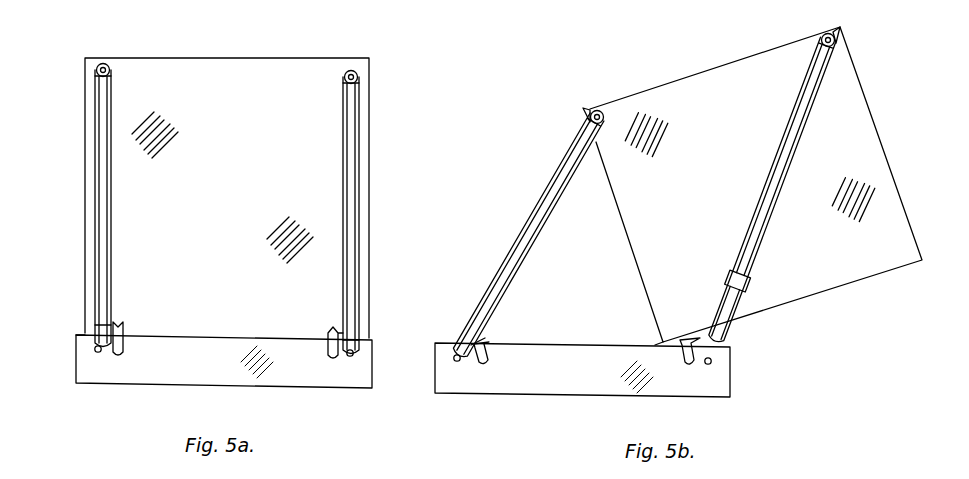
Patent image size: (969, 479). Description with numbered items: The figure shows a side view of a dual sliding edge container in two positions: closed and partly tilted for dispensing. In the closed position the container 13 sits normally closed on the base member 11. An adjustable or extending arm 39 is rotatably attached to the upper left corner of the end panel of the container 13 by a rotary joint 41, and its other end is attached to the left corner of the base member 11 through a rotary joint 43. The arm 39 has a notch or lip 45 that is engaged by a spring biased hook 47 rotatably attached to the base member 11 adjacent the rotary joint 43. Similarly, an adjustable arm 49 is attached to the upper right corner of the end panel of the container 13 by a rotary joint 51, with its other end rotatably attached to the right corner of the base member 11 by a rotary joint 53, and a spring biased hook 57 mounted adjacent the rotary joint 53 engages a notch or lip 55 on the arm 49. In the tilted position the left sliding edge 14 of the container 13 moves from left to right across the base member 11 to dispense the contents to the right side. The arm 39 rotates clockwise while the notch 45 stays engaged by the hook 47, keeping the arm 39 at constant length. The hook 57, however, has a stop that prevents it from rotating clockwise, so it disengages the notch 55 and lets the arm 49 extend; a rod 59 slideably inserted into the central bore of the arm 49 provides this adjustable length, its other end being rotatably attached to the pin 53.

In FIG. 5A, the base member 11 is at (198, 376).
In FIG. 5B, the base member 11 is at (606, 380).
In FIG. 5A, the container 13 is at (263, 62).
In FIG. 5B, the container 13 is at (700, 70).
In FIG. 5A, the left sliding edge 14 is at (85, 333).
In FIG. 5B, the left sliding edge 14 is at (660, 346).
In FIG. 5A, the adjustable arm 39 is at (103, 122).
In FIG. 5B, the adjustable arm 39 is at (548, 197).
In FIG. 5A, the rotary joint 41 is at (103, 63).
In FIG. 5B, the rotary joint 41 is at (597, 110).
In FIG. 5A, the rotary joint 43 is at (95, 351).
In FIG. 5B, the rotary joint 43 is at (455, 360).
In FIG. 5A, the notch 45 is at (104, 330).
In FIG. 5B, the notch 45 is at (480, 344).
In FIG. 5A, the spring biased hook 47 is at (120, 330).
In FIG. 5B, the spring biased hook 47 is at (490, 356).
In FIG. 5A, the adjustable arm 49 is at (355, 155).
In FIG. 5B, the adjustable arm 49 is at (795, 132).
In FIG. 5A, the rotary joint 51 is at (358, 77).
In FIG. 5B, the rotary joint 51 is at (834, 40).
In FIG. 5A, the rotary joint 53 is at (350, 357).
In FIG. 5B, the rotary joint 53 is at (712, 362).
In FIG. 5A, the notch 55 is at (347, 336).
In FIG. 5B, the notch 55 is at (736, 282).
In FIG. 5A, the spring biased hook 57 is at (333, 332).
In FIG. 5B, the spring biased hook 57 is at (684, 340).
In FIG. 5B, the rod 59 is at (724, 330).